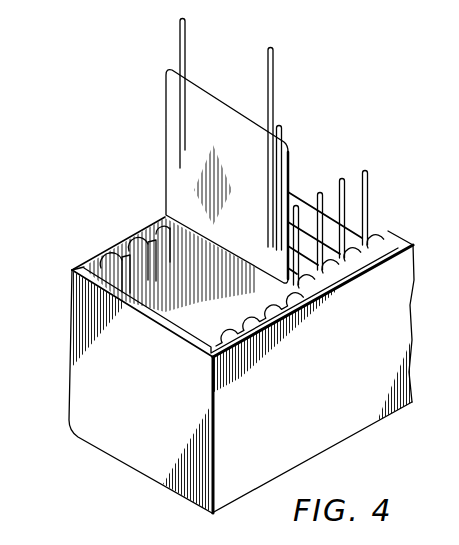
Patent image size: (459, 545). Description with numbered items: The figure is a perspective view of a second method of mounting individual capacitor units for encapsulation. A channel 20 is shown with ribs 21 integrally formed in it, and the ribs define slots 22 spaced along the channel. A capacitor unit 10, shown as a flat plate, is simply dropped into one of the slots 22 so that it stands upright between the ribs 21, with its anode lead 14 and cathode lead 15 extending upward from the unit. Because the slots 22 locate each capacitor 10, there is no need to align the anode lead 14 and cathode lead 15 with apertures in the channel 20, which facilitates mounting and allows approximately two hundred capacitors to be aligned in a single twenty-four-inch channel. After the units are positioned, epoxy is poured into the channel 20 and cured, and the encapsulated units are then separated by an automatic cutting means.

The capacitor unit 10 is at (168, 175).
The anode lead 14 is at (181, 35).
The cathode lead 15 is at (274, 68).
The channel 20 is at (82, 413).
The ribs 21 is at (110, 262).
The slots 22 is at (112, 254).